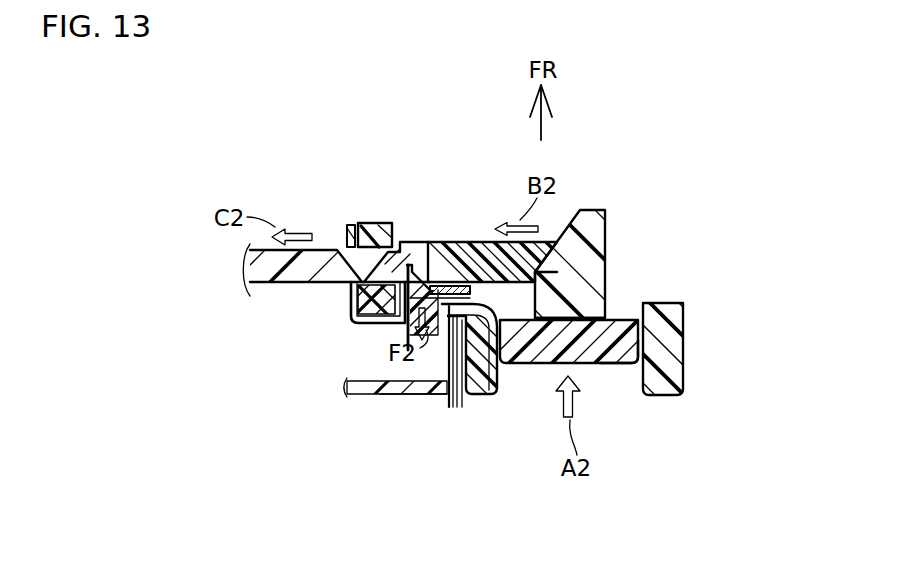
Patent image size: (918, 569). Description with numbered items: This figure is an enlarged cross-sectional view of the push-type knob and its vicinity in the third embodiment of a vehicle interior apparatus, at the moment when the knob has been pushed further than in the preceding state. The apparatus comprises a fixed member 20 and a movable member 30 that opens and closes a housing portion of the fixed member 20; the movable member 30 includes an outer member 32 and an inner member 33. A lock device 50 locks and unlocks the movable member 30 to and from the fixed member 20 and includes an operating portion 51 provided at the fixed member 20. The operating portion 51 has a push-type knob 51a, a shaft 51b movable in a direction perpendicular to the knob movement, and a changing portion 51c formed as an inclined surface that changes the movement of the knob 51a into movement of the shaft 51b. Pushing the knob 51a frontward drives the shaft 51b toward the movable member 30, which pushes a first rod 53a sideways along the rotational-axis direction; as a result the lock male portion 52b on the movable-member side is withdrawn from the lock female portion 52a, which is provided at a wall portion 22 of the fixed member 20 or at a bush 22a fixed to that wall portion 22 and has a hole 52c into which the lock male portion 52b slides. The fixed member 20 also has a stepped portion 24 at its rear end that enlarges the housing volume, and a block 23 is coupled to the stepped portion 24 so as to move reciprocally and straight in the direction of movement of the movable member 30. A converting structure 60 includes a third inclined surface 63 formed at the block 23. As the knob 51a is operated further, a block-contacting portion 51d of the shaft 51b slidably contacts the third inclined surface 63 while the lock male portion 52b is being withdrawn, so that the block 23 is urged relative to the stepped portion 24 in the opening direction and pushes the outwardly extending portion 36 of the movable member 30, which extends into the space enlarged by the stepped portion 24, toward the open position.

The fixed member 20 is at (670, 335).
The wall portion 22 is at (483, 395).
The bush 22a is at (345, 316).
The block 23 is at (409, 328).
The stepped portion 24 is at (450, 372).
The movable member 30 is at (363, 395).
The outer member 32 is at (407, 397).
The inner member 33 is at (346, 226).
The outwardly extending portion 36 is at (458, 392).
The lock device 50 is at (587, 253).
The operating portion 51 is at (532, 353).
The push-type knob 51a is at (613, 353).
The shaft 51b is at (475, 250).
The changing portion 51c is at (575, 212).
The block-contacting portion 51d is at (426, 258).
The lock female portion 52a is at (370, 243).
The lock male portion 52b is at (313, 280).
The hole 52c is at (345, 201).
The first rod 53a is at (262, 277).
The converting structure 60 is at (432, 242).
The third inclined surface 63 is at (418, 257).